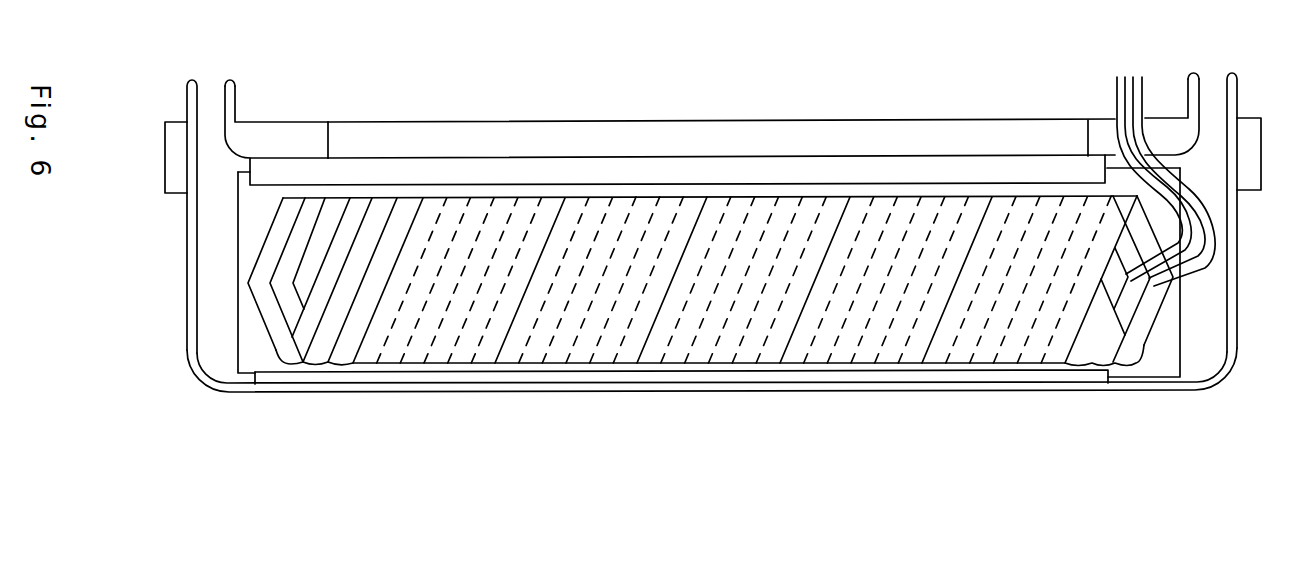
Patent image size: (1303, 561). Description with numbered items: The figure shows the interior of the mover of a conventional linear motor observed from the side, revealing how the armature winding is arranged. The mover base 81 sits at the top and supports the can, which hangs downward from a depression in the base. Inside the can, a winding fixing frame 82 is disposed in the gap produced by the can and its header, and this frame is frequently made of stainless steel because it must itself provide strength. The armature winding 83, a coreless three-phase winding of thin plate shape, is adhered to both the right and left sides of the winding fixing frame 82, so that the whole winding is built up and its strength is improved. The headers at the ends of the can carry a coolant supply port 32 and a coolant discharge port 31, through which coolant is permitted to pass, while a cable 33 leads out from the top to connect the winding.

The coolant discharge port 31 is at (213, 100).
The coolant supply port 32 is at (1213, 90).
The cable 33 is at (1117, 87).
The mover base 81 is at (408, 137).
The winding fixing frame 82 is at (265, 360).
The armature winding 83 is at (434, 362).